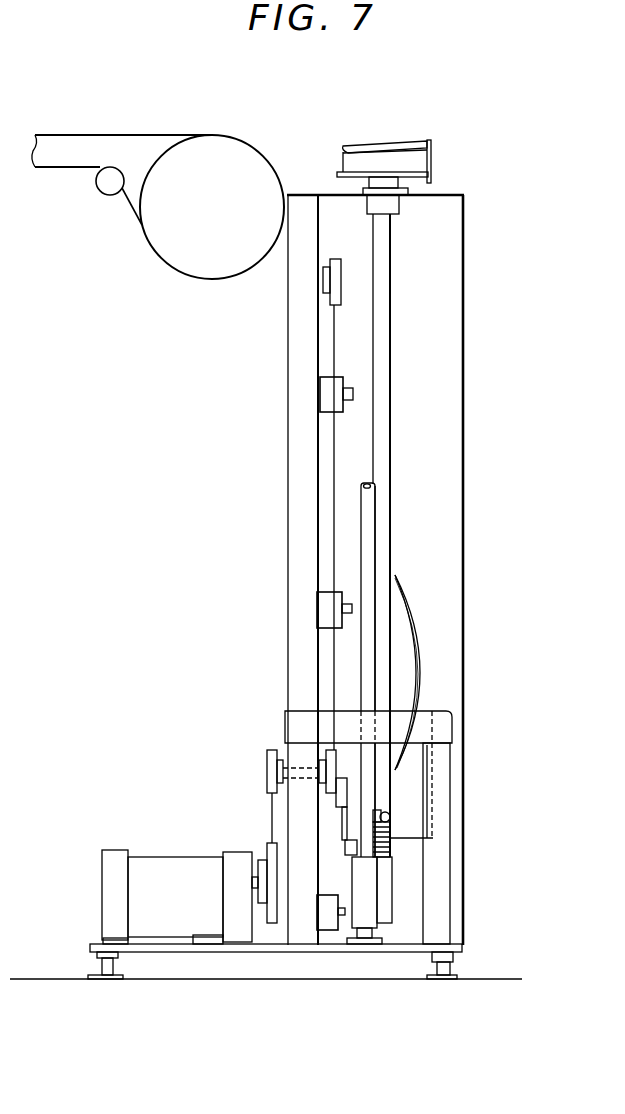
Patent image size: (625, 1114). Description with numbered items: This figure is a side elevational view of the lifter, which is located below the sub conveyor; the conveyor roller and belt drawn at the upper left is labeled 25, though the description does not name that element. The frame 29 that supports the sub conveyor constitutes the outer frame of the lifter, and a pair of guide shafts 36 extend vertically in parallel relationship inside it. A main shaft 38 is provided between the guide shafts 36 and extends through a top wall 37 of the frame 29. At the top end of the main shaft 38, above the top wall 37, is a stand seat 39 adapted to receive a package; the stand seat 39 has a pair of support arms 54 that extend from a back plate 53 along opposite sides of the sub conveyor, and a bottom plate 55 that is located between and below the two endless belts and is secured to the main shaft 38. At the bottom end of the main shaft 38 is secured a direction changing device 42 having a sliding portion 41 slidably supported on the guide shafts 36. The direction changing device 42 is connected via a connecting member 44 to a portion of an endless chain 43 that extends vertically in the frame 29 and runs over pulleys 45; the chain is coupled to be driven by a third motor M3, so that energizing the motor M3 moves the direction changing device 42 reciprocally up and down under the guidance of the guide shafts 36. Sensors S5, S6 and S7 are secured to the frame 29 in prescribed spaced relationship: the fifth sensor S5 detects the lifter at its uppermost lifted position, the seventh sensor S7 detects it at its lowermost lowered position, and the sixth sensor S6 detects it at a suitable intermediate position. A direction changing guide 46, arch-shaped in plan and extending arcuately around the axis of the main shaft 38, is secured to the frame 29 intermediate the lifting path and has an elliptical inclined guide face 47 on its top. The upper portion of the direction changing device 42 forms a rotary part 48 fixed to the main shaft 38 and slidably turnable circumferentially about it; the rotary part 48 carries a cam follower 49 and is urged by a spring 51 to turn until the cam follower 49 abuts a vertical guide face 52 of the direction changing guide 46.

The web/paper feed roller 25 is at (158, 133).
The frame 29 is at (448, 381).
The guide shafts 36 is at (367, 510).
The top wall 37 is at (428, 200).
The main shaft 38 is at (382, 302).
The stand seat 39 is at (396, 129).
The sliding portion 41 is at (365, 905).
The direction changing device 42 is at (395, 895).
The endless chain 43 is at (332, 512).
The connecting member 44 is at (340, 822).
The pulleys 45 is at (338, 290).
The direction changing guide 46 is at (422, 607).
The inclined guide face 47 is at (437, 655).
The rotary part 48 is at (378, 808).
The cam follower 49 is at (392, 818).
The spring 51 is at (393, 850).
The vertical guide face 52 is at (380, 783).
The back plate 53 is at (432, 160).
The support arms 54 is at (362, 148).
The bottom plate 55 is at (340, 170).
The fifth sensor S5 is at (347, 390).
The sixth sensor S6 is at (348, 598).
The seventh sensor S7 is at (345, 918).
The third motor M3 is at (167, 870).